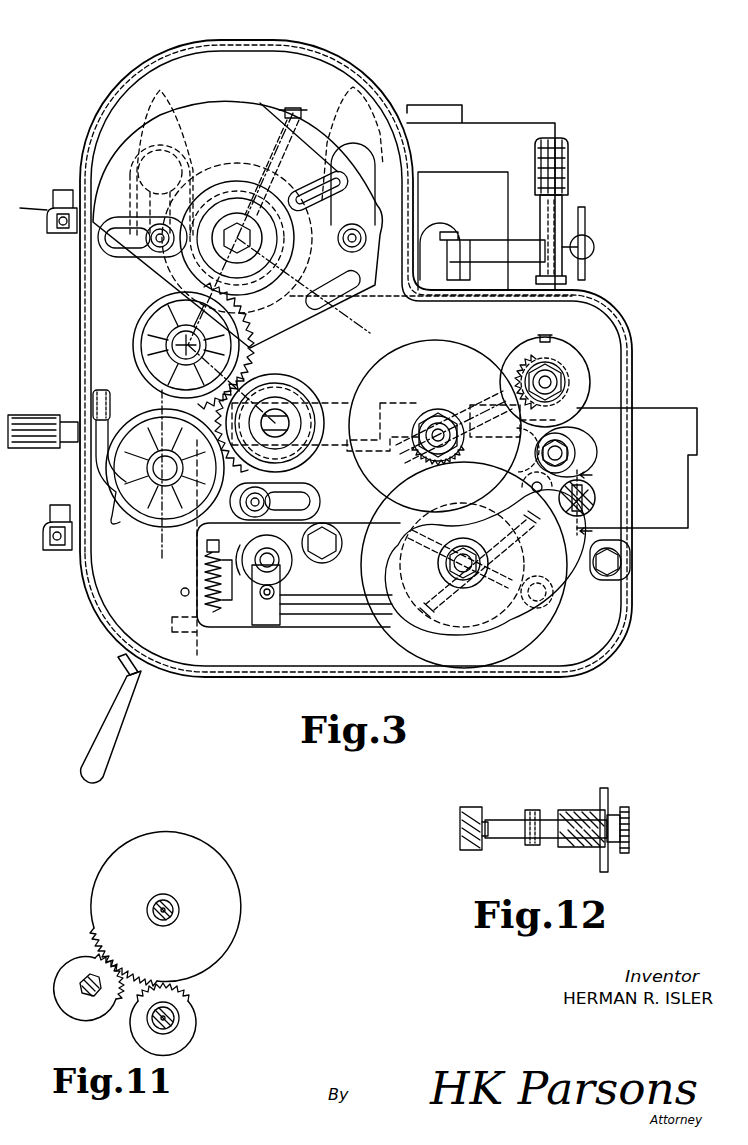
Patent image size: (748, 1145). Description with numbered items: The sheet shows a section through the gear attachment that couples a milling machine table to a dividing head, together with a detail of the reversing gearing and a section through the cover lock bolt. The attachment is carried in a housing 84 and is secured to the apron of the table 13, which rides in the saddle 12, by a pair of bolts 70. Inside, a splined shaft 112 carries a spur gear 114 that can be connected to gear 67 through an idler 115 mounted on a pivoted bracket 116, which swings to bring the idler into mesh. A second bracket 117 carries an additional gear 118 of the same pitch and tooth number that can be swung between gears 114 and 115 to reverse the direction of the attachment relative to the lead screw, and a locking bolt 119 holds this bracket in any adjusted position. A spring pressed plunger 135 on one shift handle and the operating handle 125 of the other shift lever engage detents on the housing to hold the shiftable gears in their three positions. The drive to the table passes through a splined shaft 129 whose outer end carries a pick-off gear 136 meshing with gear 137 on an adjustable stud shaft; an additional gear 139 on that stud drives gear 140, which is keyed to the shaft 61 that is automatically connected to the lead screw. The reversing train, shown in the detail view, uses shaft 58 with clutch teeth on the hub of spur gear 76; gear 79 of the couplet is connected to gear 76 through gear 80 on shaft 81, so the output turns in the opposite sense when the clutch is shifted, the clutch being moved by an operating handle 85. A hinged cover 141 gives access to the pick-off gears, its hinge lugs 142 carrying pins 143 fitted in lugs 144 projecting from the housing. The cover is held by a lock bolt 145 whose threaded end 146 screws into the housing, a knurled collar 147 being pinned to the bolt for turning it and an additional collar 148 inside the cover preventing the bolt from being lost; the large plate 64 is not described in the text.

In FIG. 3, the pivoted bracket 116 is at (204, 124).
In FIG. 3, the cam plate 64 is at (236, 235).
In FIG. 3, the pins 143 is at (62, 189).
In FIG. 3, the hinge lugs 142 is at (26, 203).
In FIG. 3, the lugs 144 is at (52, 548).
In FIG. 3, the spring pressed plunger 135 is at (570, 162).
In FIG. 3, the idler 115 is at (133, 347).
In FIG. 3, the gear 67 is at (256, 318).
In FIG. 3, the spur gear 114 is at (290, 370).
In FIG. 3, the splined shaft 112 is at (280, 420).
In FIG. 3, the second bracket 117 is at (318, 490).
In FIG. 3, the additional gear 118 is at (115, 500).
In FIG. 3, the locking bolt 119 is at (190, 522).
In FIG. 3, the gear 137 is at (428, 345).
In FIG. 3, the additional gear 139 is at (453, 408).
In FIG. 3, the pick-off gear 136 is at (548, 362).
In FIG. 3, the splined shaft 129 is at (556, 376).
In FIG. 3, the table 13 is at (660, 408).
In FIG. 3, the lock bolt 145 is at (590, 492).
In FIG. 12, the lock bolt 145 is at (506, 828).
In FIG. 3, the additional collar 148 is at (588, 512).
In FIG. 12, the additional collar 148 is at (534, 846).
In FIG. 3, the saddle 12 is at (594, 501).
In FIG. 3, the operating handle 125 is at (607, 531).
In FIG. 3, the bolts 70 is at (620, 568).
In FIG. 3, the gear 140 is at (406, 658).
In FIG. 3, the shaft 61 is at (478, 550).
In FIG. 11, the shaft 61 is at (78, 984).
In FIG. 3, the shaft 58 is at (537, 602).
In FIG. 11, the shaft 58 is at (178, 1022).
In FIG. 3, the operating handle 85 is at (120, 700).
In FIG. 11, the gear 80 is at (230, 932).
In FIG. 11, the shaft 81 is at (176, 908).
In FIG. 11, the gear 79 is at (76, 1008).
In FIG. 11, the spur gear 76 is at (198, 1003).
In FIG. 12, the housing 84 is at (468, 850).
In FIG. 12, the threaded end 146 is at (486, 820).
In FIG. 12, the hinged cover 141 is at (606, 792).
In FIG. 12, the knurled collar 147 is at (626, 800).